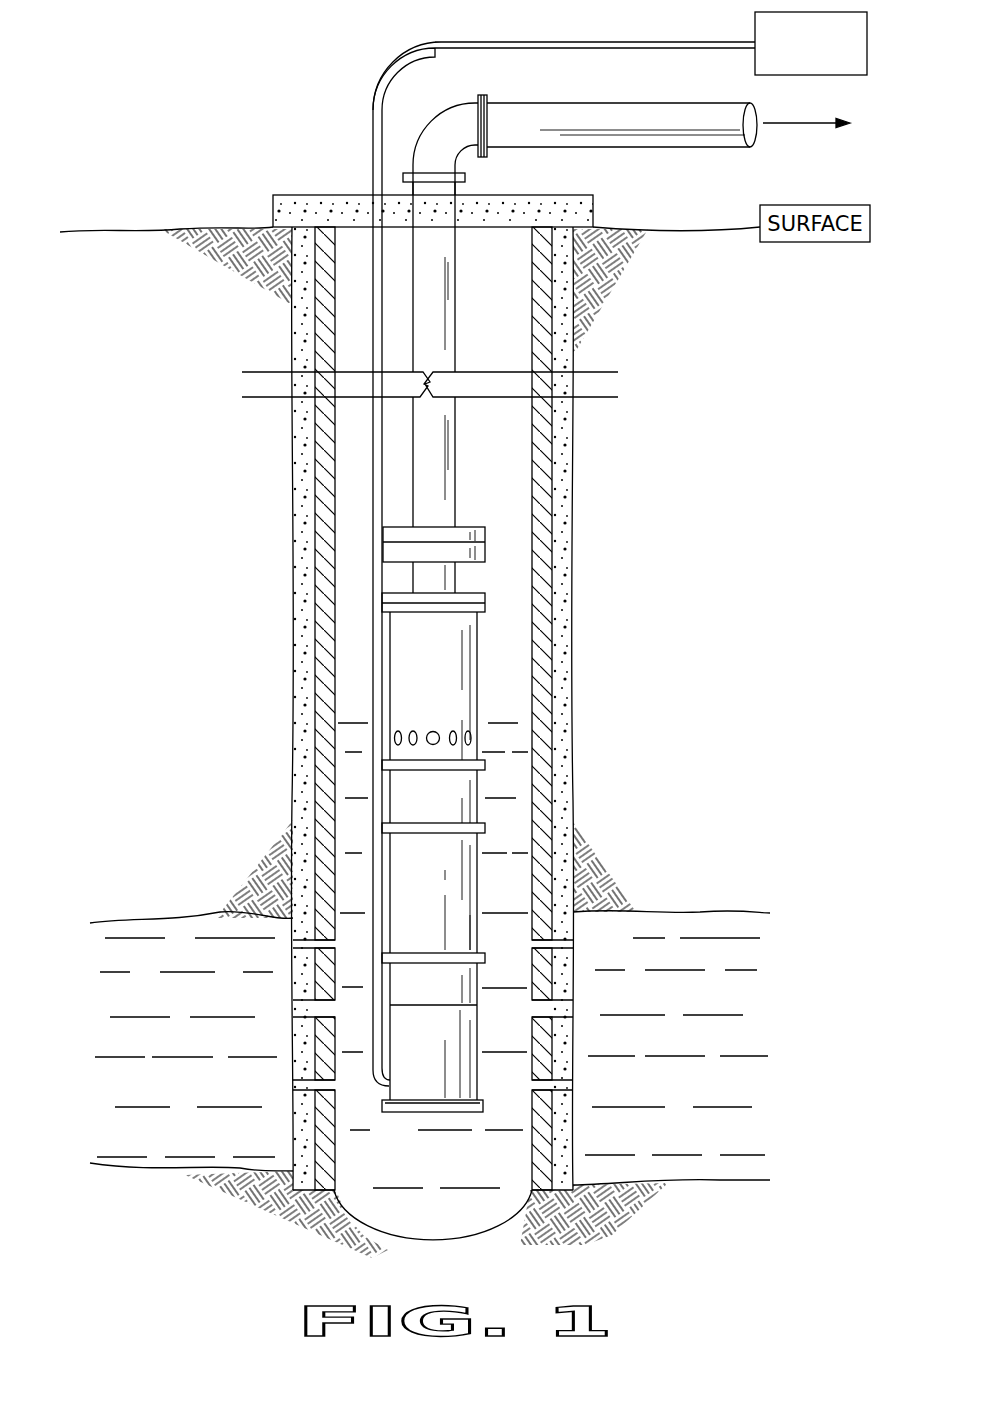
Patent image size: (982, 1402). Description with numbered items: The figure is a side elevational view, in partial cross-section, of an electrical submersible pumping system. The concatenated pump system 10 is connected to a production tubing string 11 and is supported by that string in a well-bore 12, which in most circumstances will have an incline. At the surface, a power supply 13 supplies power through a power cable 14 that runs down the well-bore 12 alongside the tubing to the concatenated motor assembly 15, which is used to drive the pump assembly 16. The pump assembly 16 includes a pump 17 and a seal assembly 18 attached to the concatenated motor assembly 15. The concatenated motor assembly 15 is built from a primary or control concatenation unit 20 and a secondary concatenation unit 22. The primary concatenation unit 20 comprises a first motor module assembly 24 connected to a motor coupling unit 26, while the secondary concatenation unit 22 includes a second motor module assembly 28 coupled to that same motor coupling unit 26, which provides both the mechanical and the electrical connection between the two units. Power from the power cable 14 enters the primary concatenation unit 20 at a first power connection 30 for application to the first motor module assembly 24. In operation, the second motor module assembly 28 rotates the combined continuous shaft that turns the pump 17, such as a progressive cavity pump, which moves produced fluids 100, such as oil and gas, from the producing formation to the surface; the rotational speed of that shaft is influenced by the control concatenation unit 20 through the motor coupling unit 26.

The concatenated pump system 10 is at (240, 437).
The production tubing string 11 is at (455, 462).
The well-bore 12 is at (500, 357).
The power supply 13 is at (755, 25).
The power cable 14 is at (373, 517).
The concatenated motor assembly 15 is at (367, 943).
The pump assembly 16 is at (353, 677).
The pump 17 is at (478, 640).
The seal assembly 18 is at (478, 790).
The primary concatenation unit 20 is at (380, 1108).
The secondary concatenation unit 22 is at (482, 882).
The first motor module assembly 24 is at (457, 1082).
The motor coupling unit 26 is at (478, 988).
The second motor module assembly 28 is at (457, 940).
The first power connection 30 is at (372, 787).
The produced fluids 100 is at (507, 740).